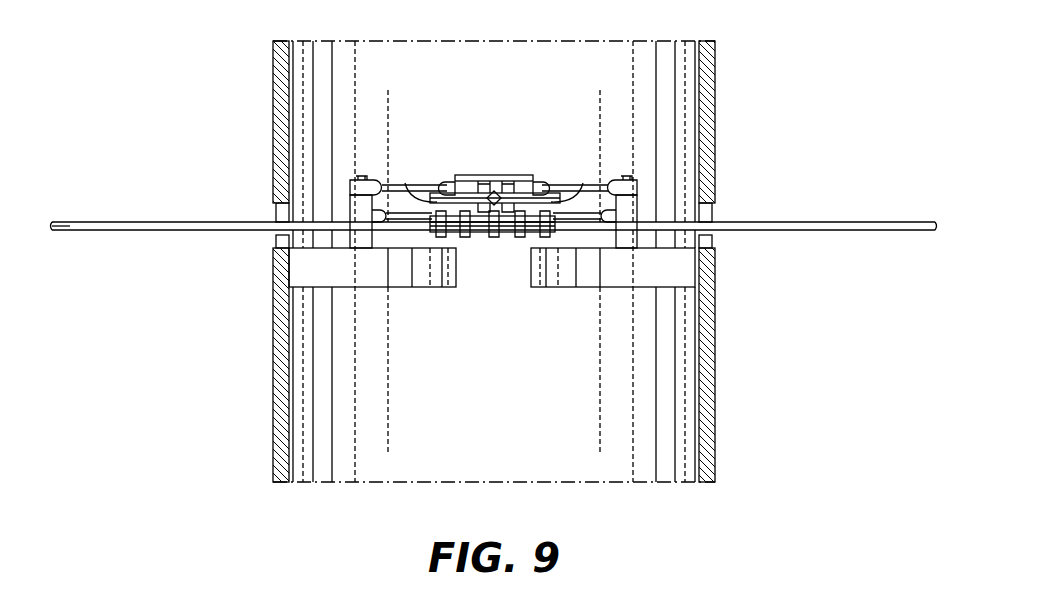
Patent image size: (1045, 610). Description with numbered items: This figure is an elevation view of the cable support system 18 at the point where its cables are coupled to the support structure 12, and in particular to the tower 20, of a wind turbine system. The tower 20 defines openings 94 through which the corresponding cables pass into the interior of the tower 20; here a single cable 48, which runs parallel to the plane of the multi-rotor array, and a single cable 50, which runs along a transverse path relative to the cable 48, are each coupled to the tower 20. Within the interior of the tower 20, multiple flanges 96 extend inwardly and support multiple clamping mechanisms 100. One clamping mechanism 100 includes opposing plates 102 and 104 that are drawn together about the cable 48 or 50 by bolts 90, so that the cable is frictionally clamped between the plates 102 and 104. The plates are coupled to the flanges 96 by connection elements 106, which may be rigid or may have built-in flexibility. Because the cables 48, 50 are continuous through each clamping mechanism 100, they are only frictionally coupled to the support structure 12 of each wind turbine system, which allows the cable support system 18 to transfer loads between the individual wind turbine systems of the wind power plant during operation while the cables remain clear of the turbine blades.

The support structure 12 is at (272, 437).
The cable support system 18 is at (65, 211).
The tower 20 is at (272, 403).
The cable 48 is at (93, 220).
The cable 50 is at (496, 190).
The bolts 90 is at (480, 190).
The openings 94 is at (275, 211).
The flanges 96 is at (368, 288).
The clamping mechanism 100 is at (538, 183).
The plate 102 is at (562, 200).
The plate 104 is at (418, 214).
The connection elements 106 is at (351, 188).